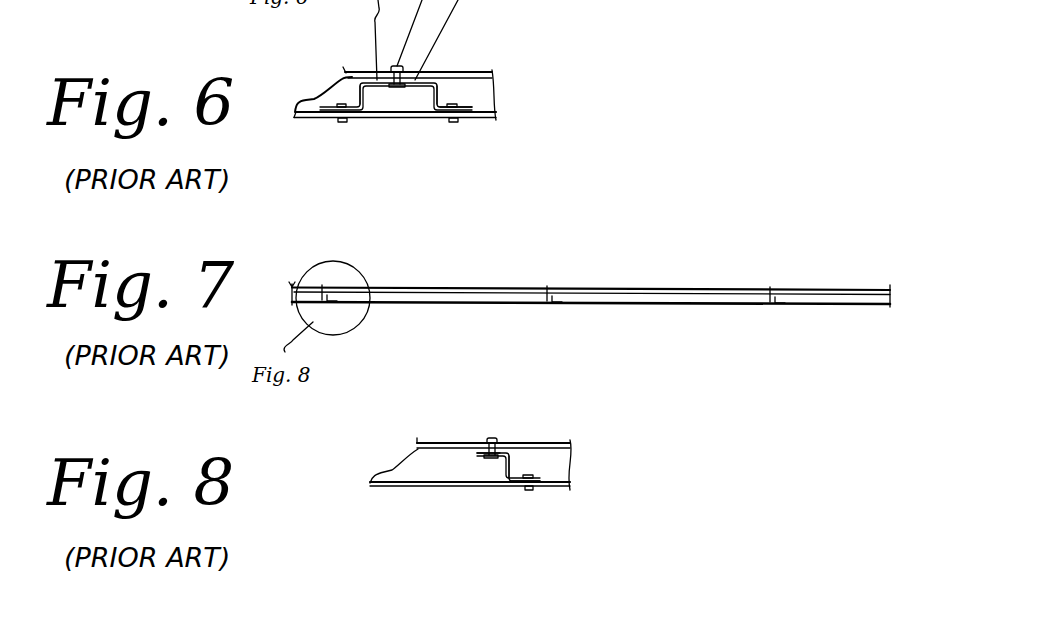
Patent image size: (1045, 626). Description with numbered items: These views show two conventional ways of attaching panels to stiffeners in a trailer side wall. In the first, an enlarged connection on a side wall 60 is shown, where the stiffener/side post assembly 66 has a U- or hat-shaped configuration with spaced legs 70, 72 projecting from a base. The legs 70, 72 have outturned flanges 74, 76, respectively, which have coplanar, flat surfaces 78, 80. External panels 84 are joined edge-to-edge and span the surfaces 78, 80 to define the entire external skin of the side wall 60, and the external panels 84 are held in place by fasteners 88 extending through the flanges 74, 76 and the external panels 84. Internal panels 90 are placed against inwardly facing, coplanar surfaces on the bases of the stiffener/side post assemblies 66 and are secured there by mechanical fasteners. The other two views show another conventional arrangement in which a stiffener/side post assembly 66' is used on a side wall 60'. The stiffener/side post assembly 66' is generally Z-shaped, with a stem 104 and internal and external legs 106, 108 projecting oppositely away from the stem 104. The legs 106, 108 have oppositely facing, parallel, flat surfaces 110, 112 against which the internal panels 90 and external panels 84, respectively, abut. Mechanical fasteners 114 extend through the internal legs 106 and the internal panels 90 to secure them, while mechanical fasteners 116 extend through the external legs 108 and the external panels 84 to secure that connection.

In FIG. 6, the side wall 60 is at (460, 48).
In FIG. 6, the stiffener/side post assembly 66 is at (436, 82).
In FIG. 6, the leg 70 is at (361, 100).
In FIG. 6, the leg 72 is at (433, 100).
In FIG. 6, the outturned flange 74 is at (335, 110).
In FIG. 6, the outturned flange 76 is at (463, 109).
In FIG. 6, the flat surface 78 is at (342, 123).
In FIG. 6, the flat surface 80 is at (448, 123).
In FIG. 6, the external panel 84 is at (400, 119).
In FIG. 7, the external panel 84 is at (622, 305).
In FIG. 8, the external panel 84 is at (372, 484).
In FIG. 6, the fastener 88 is at (340, 123).
In FIG. 6, the internal panel 90 is at (468, 72).
In FIG. 7, the internal panel 90 is at (458, 288).
In FIG. 8, the internal panel 90 is at (508, 442).
In FIG. 7, the side wall 60' is at (742, 228).
In FIG. 7, the stiffener/side post assembly 66' is at (596, 267).
In FIG. 8, the stiffener/side post assembly 66' is at (558, 439).
In FIG. 8, the stem 104 is at (472, 483).
In FIG. 8, the internal leg 106 is at (498, 442).
In FIG. 8, the external leg 108 is at (520, 485).
In FIG. 8, the flat surface 110 is at (497, 445).
In FIG. 8, the flat surface 112 is at (534, 487).
In FIG. 8, the mechanical fastener 114 is at (510, 452).
In FIG. 8, the mechanical fastener 116 is at (530, 490).